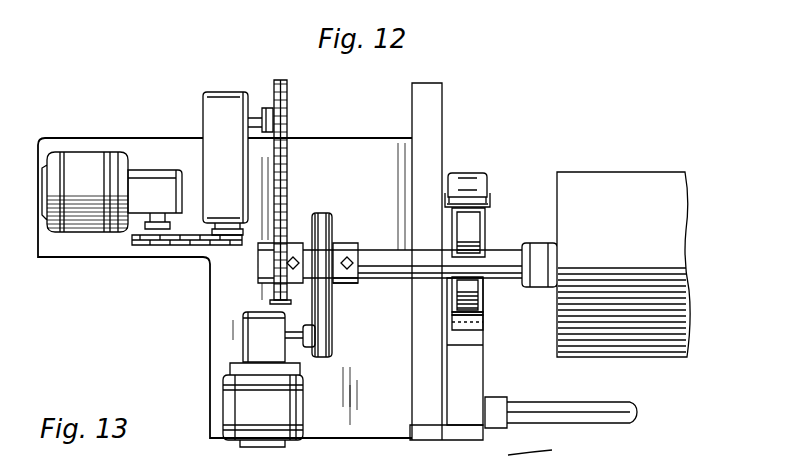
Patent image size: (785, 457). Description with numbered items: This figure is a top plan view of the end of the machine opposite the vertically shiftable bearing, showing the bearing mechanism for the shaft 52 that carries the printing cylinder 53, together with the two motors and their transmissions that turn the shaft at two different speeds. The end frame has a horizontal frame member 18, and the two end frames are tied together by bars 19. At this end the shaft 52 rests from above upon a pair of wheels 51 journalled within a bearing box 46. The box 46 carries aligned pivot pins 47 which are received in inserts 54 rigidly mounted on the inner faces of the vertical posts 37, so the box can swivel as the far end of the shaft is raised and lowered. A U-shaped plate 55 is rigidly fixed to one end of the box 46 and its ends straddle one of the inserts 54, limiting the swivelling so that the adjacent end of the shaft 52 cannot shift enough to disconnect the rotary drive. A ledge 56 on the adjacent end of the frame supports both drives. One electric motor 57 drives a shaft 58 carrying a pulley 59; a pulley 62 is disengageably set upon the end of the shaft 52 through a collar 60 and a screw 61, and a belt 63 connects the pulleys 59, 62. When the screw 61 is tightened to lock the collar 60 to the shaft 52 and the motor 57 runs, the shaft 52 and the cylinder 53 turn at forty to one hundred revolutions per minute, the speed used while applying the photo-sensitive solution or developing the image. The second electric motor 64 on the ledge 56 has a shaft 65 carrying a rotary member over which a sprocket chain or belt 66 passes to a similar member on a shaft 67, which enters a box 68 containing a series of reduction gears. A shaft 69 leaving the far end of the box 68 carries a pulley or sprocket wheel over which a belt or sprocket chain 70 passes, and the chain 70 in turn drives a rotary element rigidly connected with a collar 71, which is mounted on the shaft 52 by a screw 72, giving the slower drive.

The horizontal frame member 18 is at (412, 384).
The bar 19 is at (590, 404).
The vertical post 37 is at (455, 186).
The bearing box 46 is at (483, 313).
The pivot pin 47 is at (470, 188).
The wheel 51 is at (472, 222).
The shaft 52 is at (387, 250).
The printing cylinder 53 is at (640, 188).
The insert 54 is at (480, 195).
The U-shaped plate 55 is at (492, 202).
The ledge 56 is at (362, 440).
The electric motor 57 is at (240, 413).
The shaft 58 is at (290, 337).
The pulley 59 is at (326, 346).
The collar 60 is at (345, 242).
The screw 61 is at (360, 281).
The pulley 62 is at (312, 222).
The belt 63 is at (333, 322).
The electric motor 64 is at (79, 158).
The shaft 65 is at (160, 212).
The sprocket chain or belt 66 is at (160, 246).
The shaft 67 is at (226, 220).
The box 68 is at (222, 95).
The shaft 69 is at (262, 108).
The belt or sprocket chain 70 is at (289, 148).
The collar 71 is at (272, 283).
The screw 72 is at (262, 264).